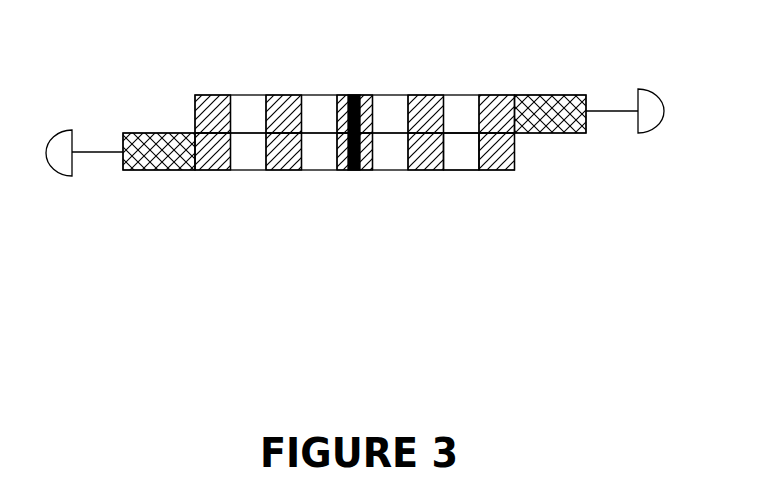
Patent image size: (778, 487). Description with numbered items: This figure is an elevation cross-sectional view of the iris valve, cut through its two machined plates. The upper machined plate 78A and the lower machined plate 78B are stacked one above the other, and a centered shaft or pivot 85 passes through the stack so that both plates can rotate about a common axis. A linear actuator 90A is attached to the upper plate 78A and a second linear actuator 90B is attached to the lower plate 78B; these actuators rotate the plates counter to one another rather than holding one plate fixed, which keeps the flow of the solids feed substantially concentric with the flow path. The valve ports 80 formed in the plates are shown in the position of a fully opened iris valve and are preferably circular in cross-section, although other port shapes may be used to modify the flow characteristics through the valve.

The machined plate 78A is at (187, 112).
The machined plate 78B is at (213, 178).
The valve port 80 is at (463, 177).
The centered shaft or pivot 85 is at (351, 94).
The linear actuator 90A is at (602, 145).
The linear actuator 90B is at (112, 193).